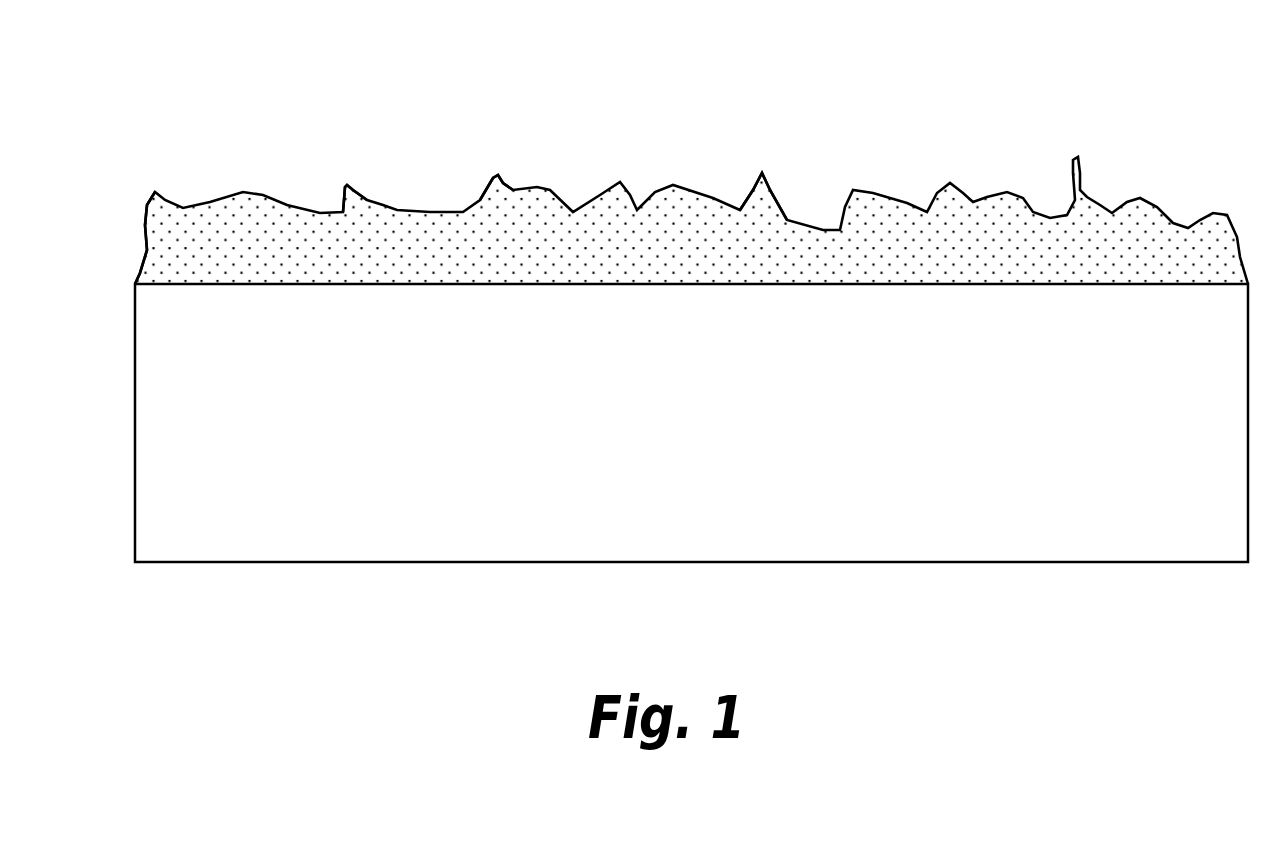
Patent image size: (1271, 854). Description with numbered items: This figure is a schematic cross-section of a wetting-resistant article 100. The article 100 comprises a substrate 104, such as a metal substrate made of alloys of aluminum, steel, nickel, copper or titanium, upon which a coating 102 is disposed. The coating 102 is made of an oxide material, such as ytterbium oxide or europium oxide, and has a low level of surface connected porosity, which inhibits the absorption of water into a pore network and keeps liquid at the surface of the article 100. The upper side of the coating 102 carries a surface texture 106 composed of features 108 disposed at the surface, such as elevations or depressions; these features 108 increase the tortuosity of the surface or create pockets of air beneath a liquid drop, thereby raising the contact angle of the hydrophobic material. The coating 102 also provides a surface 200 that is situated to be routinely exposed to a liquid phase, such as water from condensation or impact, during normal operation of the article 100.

The article 100 is at (643, 411).
The coating 102 is at (643, 171).
The substrate 104 is at (143, 488).
The surface texture 106 is at (1176, 179).
The features 108 is at (746, 157).
The surface 200 is at (143, 185).